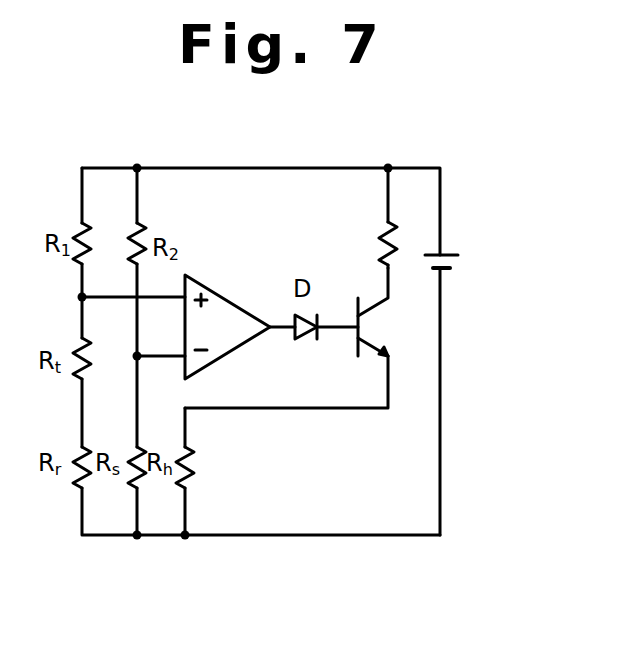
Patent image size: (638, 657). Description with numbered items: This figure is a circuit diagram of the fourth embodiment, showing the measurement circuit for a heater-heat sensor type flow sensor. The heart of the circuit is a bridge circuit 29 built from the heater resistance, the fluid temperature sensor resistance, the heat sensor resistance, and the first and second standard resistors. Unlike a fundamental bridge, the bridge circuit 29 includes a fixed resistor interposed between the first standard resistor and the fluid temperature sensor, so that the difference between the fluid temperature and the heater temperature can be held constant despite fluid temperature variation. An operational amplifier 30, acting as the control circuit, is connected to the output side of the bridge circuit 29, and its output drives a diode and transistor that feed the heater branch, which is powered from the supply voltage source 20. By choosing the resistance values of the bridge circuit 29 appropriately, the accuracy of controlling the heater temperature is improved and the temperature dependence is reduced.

The operational amplifier 30 is at (227, 300).
The power supply battery V 20 is at (455, 268).
The bridge circuit 29 is at (102, 482).